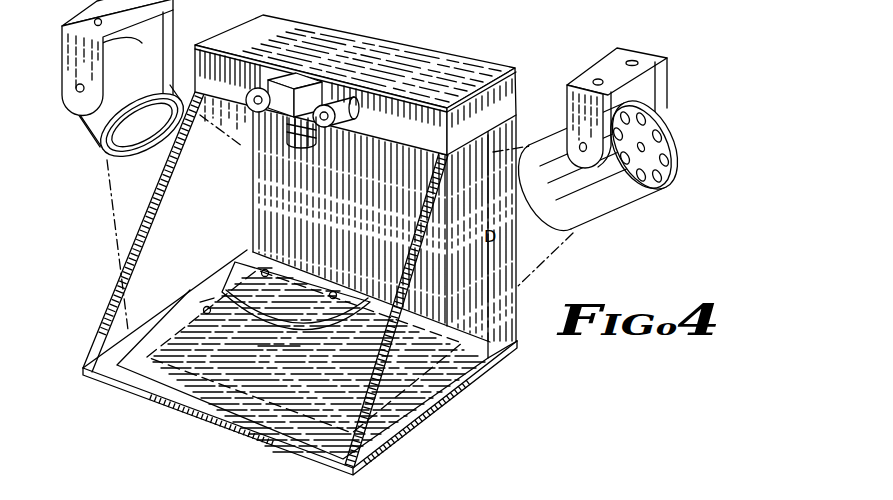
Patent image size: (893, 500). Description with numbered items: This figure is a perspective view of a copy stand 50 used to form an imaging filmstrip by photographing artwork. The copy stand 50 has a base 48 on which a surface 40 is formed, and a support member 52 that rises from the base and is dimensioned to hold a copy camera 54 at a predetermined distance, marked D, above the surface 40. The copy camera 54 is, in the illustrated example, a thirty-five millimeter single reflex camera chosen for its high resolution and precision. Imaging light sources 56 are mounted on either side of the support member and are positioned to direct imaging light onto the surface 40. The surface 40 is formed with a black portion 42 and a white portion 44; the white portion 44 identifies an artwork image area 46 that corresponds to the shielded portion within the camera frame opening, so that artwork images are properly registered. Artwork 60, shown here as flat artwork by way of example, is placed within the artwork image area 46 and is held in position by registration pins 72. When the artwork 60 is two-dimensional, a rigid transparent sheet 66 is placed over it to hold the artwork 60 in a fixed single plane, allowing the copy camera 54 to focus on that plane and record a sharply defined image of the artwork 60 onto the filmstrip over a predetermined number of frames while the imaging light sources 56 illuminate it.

The surface 40 is at (420, 413).
The black portion 42 is at (310, 397).
The white portion 44 is at (297, 300).
The artwork image area 46 is at (275, 339).
The base 48 is at (497, 363).
The copy stand 50 is at (502, 51).
The support member 52 is at (433, 70).
The copy camera 54 is at (311, 92).
The imaging light sources 56 is at (84, 151).
The artwork 60 is at (243, 318).
The rigid transparent sheet 66 is at (795, 493).
The registration pins 72 is at (265, 273).